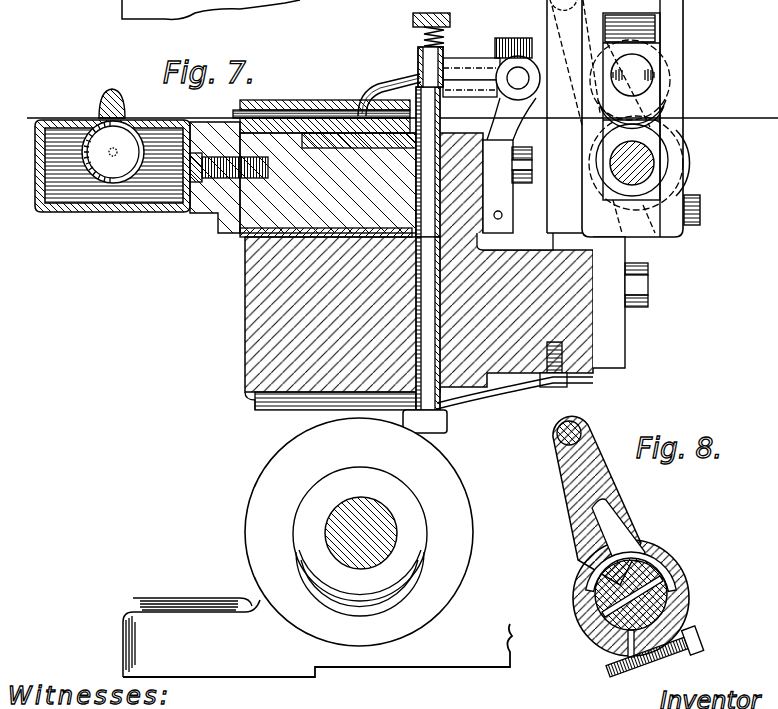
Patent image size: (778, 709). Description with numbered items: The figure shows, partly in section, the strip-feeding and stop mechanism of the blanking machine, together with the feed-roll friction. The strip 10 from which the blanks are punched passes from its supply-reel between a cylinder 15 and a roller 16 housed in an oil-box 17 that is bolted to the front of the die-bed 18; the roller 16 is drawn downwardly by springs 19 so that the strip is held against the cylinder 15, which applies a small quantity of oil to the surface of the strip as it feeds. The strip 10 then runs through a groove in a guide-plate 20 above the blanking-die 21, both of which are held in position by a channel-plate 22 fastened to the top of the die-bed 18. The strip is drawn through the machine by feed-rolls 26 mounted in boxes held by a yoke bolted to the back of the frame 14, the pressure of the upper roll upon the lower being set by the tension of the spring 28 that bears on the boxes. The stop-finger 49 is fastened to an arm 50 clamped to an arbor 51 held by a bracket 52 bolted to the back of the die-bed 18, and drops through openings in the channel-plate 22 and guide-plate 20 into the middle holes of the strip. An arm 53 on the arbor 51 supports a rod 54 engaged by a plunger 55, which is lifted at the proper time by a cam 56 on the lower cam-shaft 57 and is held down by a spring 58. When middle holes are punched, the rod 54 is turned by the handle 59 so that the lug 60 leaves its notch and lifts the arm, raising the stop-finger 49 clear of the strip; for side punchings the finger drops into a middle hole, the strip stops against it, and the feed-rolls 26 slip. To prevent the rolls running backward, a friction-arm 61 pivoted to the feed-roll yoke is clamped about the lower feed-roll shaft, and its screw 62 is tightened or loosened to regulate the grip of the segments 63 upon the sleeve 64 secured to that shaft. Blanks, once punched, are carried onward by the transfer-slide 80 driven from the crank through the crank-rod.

In FIG. 7, the strip 10 is at (196, 117).
In FIG. 7, the frame 14 is at (419, 262).
In FIG. 7, the cylinder 15 is at (133, 126).
In FIG. 7, the roller 16 is at (100, 101).
In FIG. 7, the oil-box 17 is at (158, 206).
In FIG. 7, the die-bed 18 is at (252, 209).
In FIG. 7, the springs 19 is at (84, 170).
In FIG. 7, the guide-plate 20 is at (253, 111).
In FIG. 7, the blanking-die 21 is at (287, 124).
In FIG. 7, the channel-plate 22 is at (338, 100).
In FIG. 7, the feed-rolls 26 is at (672, 83).
In FIG. 7, the spring 28 is at (656, 25).
In FIG. 7, the stop-finger 49 is at (370, 78).
In FIG. 7, the arm 50 is at (478, 86).
In FIG. 7, the arbor 51 is at (525, 40).
In FIG. 7, the bracket 52 is at (515, 174).
In FIG. 7, the arm 53 is at (460, 58).
In FIG. 7, the rod 54 is at (425, 180).
In FIG. 7, the plunger 55 is at (421, 318).
In FIG. 7, the cam 56 is at (317, 547).
In FIG. 7, the lower cam-shaft 57 is at (340, 524).
In FIG. 7, the spring 58 is at (517, 385).
In FIG. 7, the handle 59 is at (413, 19).
In FIG. 7, the lug 60 is at (417, 80).
In FIG. 7, the friction-arm 61 is at (572, 72).
In FIG. 8, the friction-arm 61 is at (612, 491).
In FIG. 7, the screw 62 is at (701, 212).
In FIG. 8, the screw 62 is at (697, 640).
In FIG. 8, the segments 63 is at (673, 583).
In FIG. 8, the sleeve 64 is at (643, 557).
In FIG. 7, the transfer-slide 80 is at (330, 183).